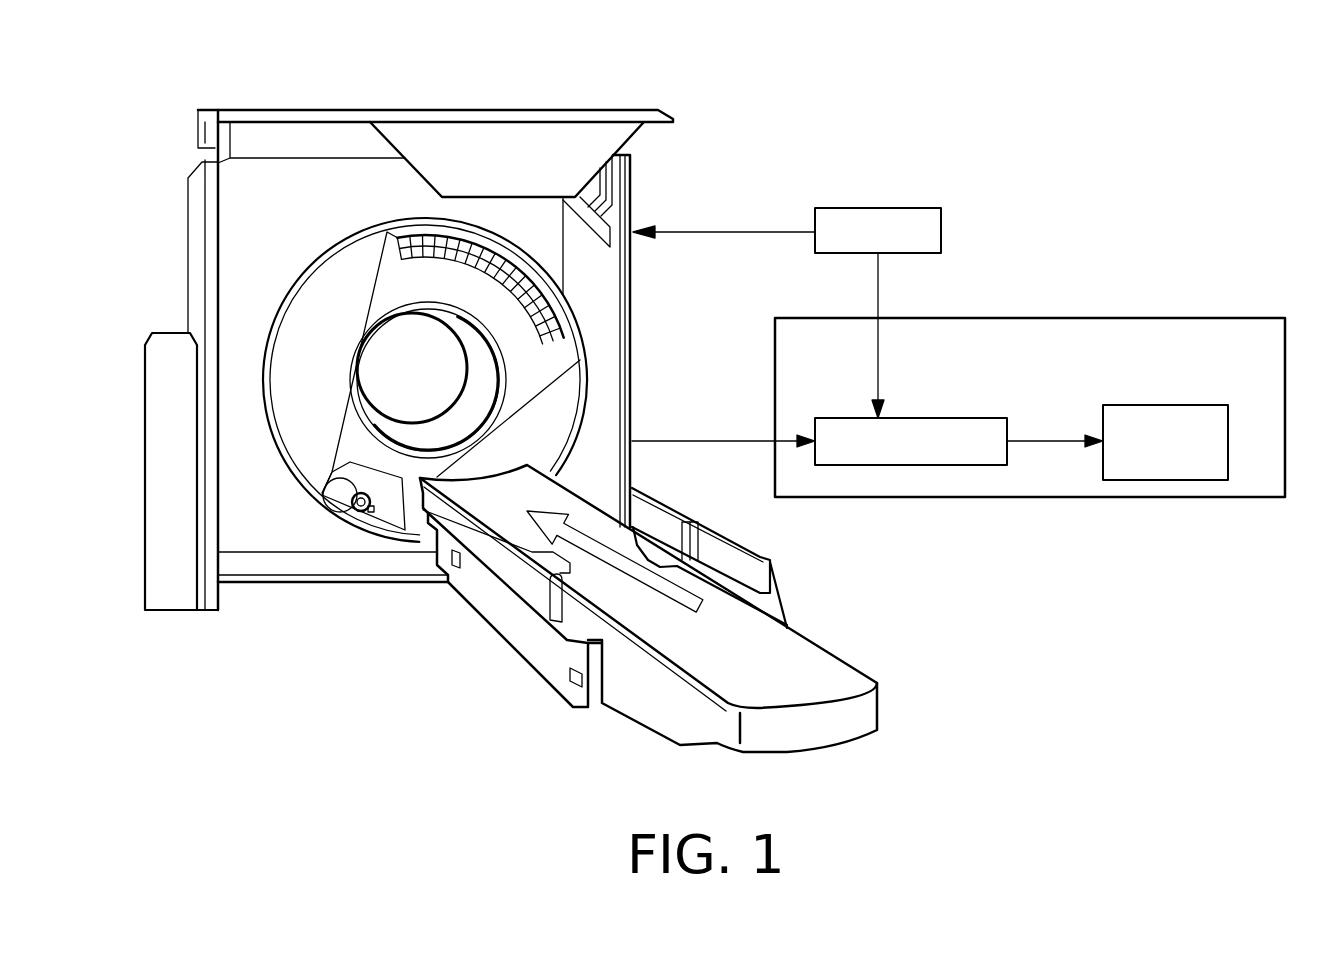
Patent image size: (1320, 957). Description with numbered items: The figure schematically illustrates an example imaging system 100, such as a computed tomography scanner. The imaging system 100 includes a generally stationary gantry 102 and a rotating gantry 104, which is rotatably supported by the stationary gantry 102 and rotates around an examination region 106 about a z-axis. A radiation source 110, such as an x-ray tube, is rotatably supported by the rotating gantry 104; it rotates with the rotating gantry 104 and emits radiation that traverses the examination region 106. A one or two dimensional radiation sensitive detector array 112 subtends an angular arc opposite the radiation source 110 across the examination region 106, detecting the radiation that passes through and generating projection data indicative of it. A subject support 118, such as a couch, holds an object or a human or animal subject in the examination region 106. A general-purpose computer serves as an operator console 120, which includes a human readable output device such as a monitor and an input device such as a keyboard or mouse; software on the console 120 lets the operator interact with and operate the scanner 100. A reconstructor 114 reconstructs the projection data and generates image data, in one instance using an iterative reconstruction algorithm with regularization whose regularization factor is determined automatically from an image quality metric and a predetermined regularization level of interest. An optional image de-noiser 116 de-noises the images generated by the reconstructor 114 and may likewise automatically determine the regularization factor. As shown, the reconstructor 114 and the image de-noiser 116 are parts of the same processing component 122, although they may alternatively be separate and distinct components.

The imaging system 100 is at (731, 114).
The stationary gantry 102 is at (208, 243).
The rotating gantry 104 is at (393, 282).
The examination region 106 is at (403, 363).
The radiation source 110 is at (357, 512).
The detector array 112 is at (517, 280).
The reconstructor 114 is at (938, 418).
The image de-noiser 116 is at (1163, 405).
The subject support 118 is at (812, 680).
The console 120 is at (875, 208).
The processing component 122 is at (1022, 318).